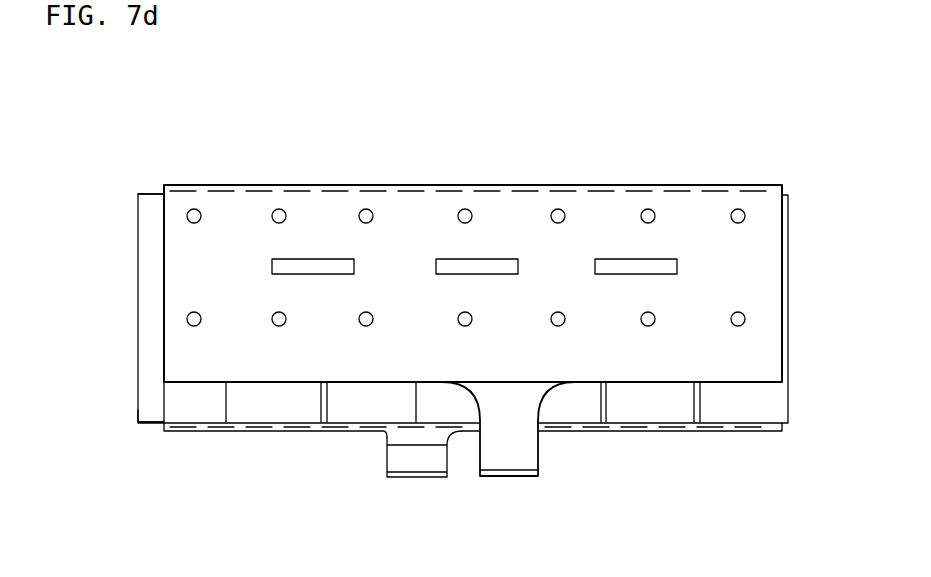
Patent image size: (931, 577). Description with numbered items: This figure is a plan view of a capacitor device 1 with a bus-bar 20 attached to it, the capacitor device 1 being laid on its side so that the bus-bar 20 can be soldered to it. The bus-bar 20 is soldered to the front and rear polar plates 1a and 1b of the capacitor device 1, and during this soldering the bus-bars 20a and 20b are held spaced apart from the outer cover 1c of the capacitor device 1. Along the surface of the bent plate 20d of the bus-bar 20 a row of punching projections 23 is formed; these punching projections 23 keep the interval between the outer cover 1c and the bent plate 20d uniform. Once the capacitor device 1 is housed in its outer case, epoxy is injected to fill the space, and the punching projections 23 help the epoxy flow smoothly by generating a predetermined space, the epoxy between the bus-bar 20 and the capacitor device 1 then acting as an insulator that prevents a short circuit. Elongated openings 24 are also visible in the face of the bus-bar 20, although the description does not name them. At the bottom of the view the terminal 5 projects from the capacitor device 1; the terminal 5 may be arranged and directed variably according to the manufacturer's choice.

The capacitor device 1 is at (770, 403).
The polar plate 1a is at (152, 192).
The polar plate 1b is at (145, 425).
The outer cover 1c is at (153, 220).
The terminal 5 is at (492, 477).
The bus-bar 20 is at (683, 209).
The bus-bar 20a is at (412, 185).
The bus-bar 20b is at (700, 432).
The bent plate 20d is at (622, 198).
The punching projection 23 is at (558, 213).
The slots 24 is at (293, 259).